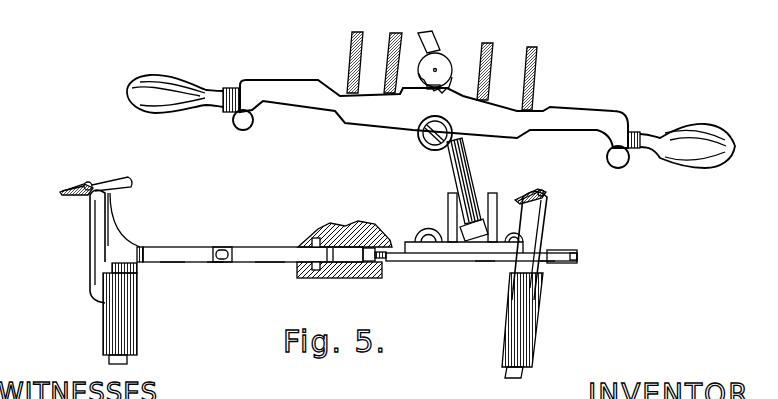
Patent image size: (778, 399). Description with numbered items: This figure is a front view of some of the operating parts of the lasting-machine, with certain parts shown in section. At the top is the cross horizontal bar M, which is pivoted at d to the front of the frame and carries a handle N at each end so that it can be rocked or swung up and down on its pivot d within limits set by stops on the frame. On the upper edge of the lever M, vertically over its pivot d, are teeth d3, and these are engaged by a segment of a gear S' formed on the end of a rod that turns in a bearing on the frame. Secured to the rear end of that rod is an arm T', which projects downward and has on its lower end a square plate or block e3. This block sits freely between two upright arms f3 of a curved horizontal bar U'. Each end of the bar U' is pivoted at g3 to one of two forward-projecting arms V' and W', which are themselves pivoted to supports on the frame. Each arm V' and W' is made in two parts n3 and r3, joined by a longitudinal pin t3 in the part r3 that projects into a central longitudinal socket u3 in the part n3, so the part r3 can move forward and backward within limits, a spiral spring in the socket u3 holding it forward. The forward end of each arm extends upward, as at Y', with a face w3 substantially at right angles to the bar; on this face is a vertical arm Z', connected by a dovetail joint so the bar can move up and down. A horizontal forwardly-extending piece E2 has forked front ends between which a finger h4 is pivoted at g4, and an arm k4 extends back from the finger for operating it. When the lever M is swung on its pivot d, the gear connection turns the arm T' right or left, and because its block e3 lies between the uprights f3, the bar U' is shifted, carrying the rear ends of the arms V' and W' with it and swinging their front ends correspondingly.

The handle N is at (696, 122).
The segment of a gear S' is at (444, 59).
The teeth d3 is at (429, 93).
The cross horizontal bar M is at (392, 120).
The pivot d is at (431, 145).
The arm T' is at (472, 181).
The square plate or block e3 is at (472, 236).
The upright arms f3 is at (507, 187).
The curved horizontal bar U' is at (470, 267).
The arm W' is at (569, 240).
The arm V' is at (250, 236).
The central longitudinal socket u3 is at (228, 246).
The part r3 is at (549, 268).
The longitudinal projecting pin t3 is at (215, 263).
The part n3 is at (488, 265).
The pivot g3 is at (366, 288).
The vertical arm Z' is at (319, 246).
The upwardly-extending forward end Y' is at (323, 293).
The face w3 is at (121, 207).
The horizontal forwardly-extending piece E2 is at (545, 181).
The pivot g4 is at (89, 182).
The finger h4 is at (532, 194).
The arm k4 is at (123, 183).